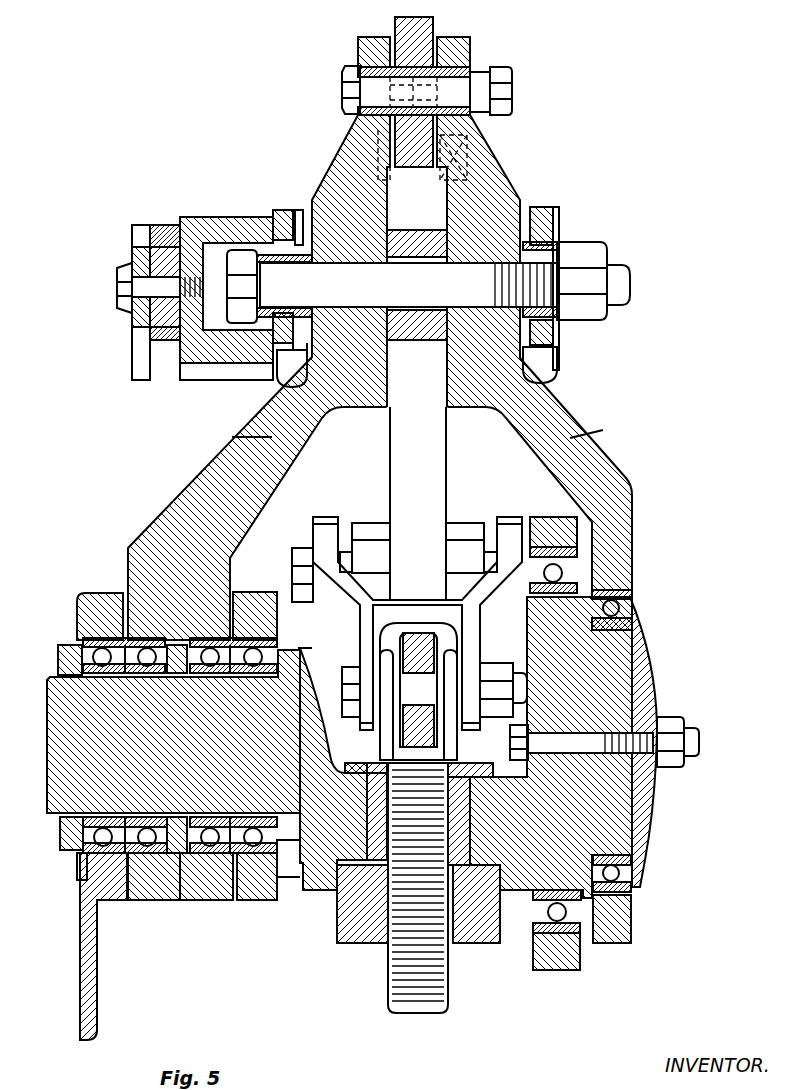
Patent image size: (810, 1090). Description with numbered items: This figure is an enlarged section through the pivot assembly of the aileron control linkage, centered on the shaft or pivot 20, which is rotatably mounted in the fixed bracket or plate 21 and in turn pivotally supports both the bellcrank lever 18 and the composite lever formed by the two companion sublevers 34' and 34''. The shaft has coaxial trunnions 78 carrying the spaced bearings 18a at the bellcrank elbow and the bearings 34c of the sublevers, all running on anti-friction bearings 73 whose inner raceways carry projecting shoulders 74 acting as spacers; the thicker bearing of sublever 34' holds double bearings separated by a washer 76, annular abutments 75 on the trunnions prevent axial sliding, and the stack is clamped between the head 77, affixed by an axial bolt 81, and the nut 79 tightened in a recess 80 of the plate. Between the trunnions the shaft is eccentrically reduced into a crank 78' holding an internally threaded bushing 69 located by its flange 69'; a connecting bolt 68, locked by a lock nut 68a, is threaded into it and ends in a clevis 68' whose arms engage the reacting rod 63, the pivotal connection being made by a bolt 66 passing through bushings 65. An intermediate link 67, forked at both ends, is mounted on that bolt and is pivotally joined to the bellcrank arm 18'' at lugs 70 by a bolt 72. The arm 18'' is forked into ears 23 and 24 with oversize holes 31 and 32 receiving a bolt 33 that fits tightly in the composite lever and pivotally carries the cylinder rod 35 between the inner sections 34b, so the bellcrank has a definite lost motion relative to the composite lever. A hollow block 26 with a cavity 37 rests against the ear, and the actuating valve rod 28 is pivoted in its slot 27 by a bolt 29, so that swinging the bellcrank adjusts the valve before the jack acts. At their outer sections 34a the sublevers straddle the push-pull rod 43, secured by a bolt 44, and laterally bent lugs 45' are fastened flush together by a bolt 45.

The bellcrank lever 18 is at (466, 747).
The arm of bellcrank 18'' is at (398, 383).
The bearings or mounting members 18a is at (270, 593).
The shaft or pivot 20 is at (75, 747).
The bracket or plate 21 is at (85, 978).
The ear 23 is at (283, 212).
The ear 24 is at (560, 222).
The hollow block 26 is at (205, 380).
The slot or channel 27 is at (150, 348).
The actuating valve rod 28 is at (168, 230).
The bolt 29 is at (118, 290).
The oversize hole 31 is at (298, 210).
The oversize hole 32 is at (545, 208).
The bolt 33 is at (630, 283).
The outer section of sublever 34a is at (492, 48).
The inner section of sublever 34b is at (540, 182).
The sublever 34' is at (235, 438).
The sublever 34'' is at (604, 426).
The bearing of sublever 34c is at (648, 558).
The cylinder rod 35 is at (432, 231).
The cavity 37 is at (226, 250).
The push-pull rod 43 is at (420, 46).
The bolt 44 is at (513, 92).
The bolt or fastening means 45 is at (349, 147).
The lug 45' is at (482, 150).
The reacting rod 63 is at (428, 633).
The bushing 65 is at (402, 638).
The bolt 66 is at (352, 695).
The intermediate link 67 is at (360, 592).
The connecting bolt 68 is at (440, 888).
The clevis 68' is at (391, 691).
The lock nut 68a is at (463, 918).
The internally threaded bushing 69 is at (403, 853).
The flange 69' is at (360, 797).
The lugs or shoulders 70 is at (460, 533).
The bolt 72 is at (305, 549).
The anti-friction bearings 73 is at (68, 648).
The projecting shoulders 74 is at (226, 640).
The annular abutments or shoulders 75 is at (306, 652).
The washer 76 is at (172, 645).
The head 77 is at (648, 686).
The trunnions 78 is at (353, 742).
The crank 78' is at (306, 877).
The nut 79 is at (60, 833).
The recess 80 is at (78, 865).
The bolt 81 is at (613, 742).